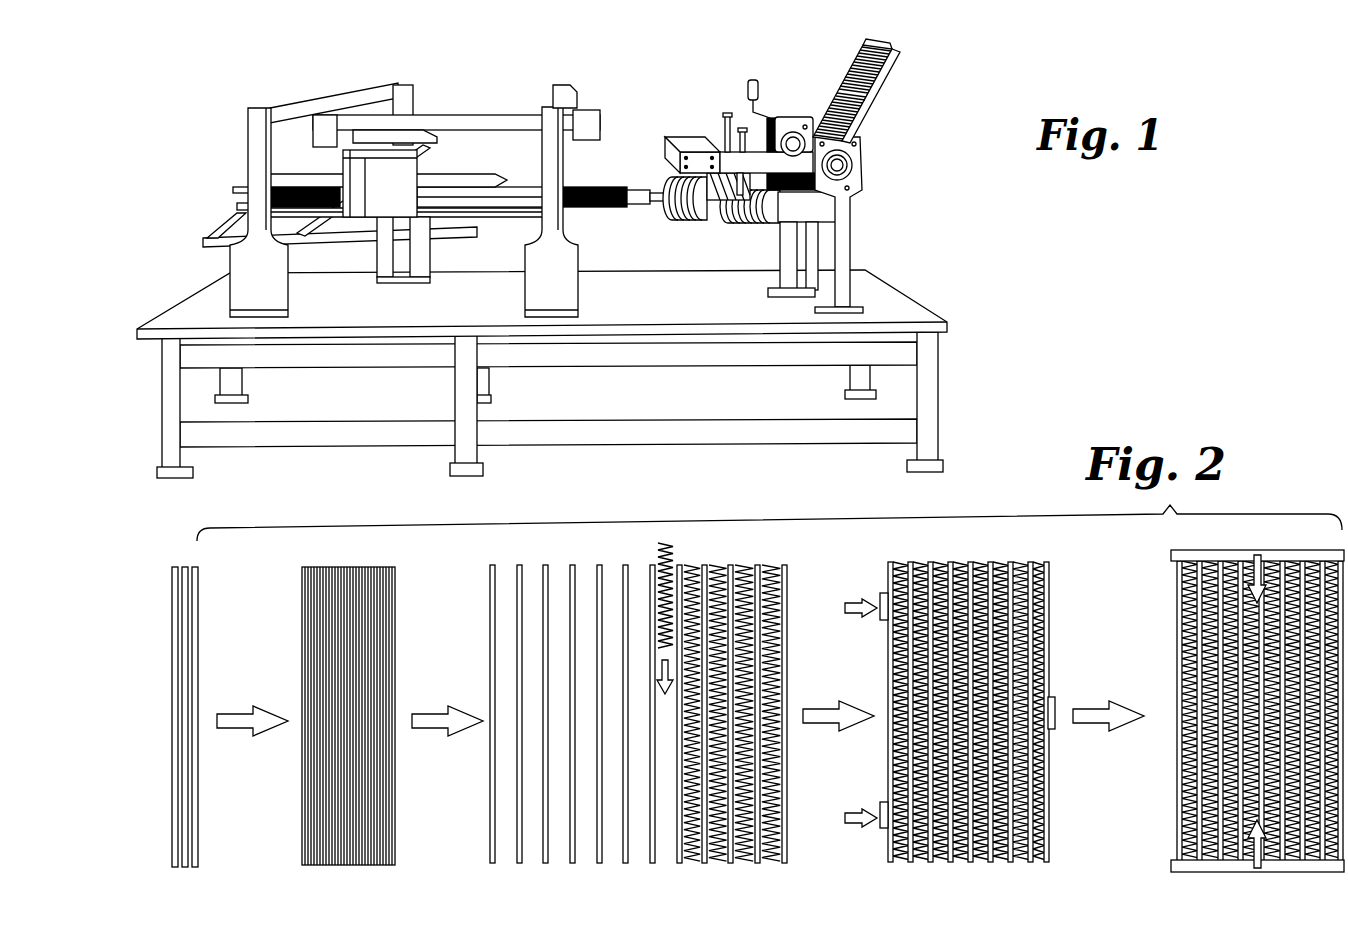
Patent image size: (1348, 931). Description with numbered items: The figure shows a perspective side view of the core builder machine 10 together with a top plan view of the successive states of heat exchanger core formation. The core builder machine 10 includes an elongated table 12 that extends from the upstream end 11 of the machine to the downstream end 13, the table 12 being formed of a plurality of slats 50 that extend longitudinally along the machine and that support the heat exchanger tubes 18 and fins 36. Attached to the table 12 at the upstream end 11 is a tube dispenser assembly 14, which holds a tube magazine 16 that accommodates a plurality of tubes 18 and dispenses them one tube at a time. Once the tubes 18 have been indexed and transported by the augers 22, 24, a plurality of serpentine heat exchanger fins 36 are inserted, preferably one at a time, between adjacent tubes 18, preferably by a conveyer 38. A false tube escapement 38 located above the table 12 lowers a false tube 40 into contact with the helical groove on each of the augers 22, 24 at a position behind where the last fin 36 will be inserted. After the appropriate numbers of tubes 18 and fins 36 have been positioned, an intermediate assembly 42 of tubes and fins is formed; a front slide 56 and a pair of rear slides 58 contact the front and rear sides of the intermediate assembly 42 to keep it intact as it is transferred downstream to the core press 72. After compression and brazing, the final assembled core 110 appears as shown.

In FIG. 1, the core builder machine 10 is at (641, 131).
In FIG. 1, the upstream end 11 is at (866, 178).
In FIG. 1, the elongated table 12 is at (637, 205).
In FIG. 1, the downstream end 13 is at (228, 200).
In FIG. 1, the tube dispenser assembly 14 is at (770, 108).
In FIG. 1, the tube magazine 16 is at (898, 99).
In FIG. 2, the tube magazine 16 is at (318, 872).
In FIG. 1, the tubes 18 is at (900, 40).
In FIG. 2, the tubes 18 is at (183, 868).
In FIG. 1, the auger 22 is at (757, 227).
In FIG. 1, the auger 24 is at (717, 170).
In FIG. 2, the serpentine heat exchanger fins 36 is at (690, 865).
In FIG. 1, the false tube escapement 38 is at (690, 148).
In FIG. 1, the false tube 40 is at (707, 215).
In FIG. 2, the intermediate assembly 42 is at (942, 866).
In FIG. 1, the slats 50 is at (502, 207).
In FIG. 2, the front slide 56 is at (1057, 700).
In FIG. 2, the rear slides 58 is at (880, 597).
In FIG. 1, the core press 72 is at (360, 170).
In FIG. 2, the final assembled core 110 is at (1203, 876).